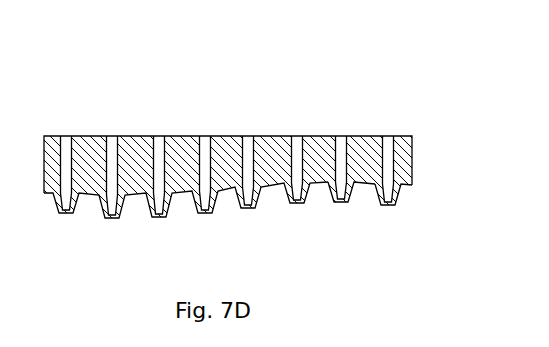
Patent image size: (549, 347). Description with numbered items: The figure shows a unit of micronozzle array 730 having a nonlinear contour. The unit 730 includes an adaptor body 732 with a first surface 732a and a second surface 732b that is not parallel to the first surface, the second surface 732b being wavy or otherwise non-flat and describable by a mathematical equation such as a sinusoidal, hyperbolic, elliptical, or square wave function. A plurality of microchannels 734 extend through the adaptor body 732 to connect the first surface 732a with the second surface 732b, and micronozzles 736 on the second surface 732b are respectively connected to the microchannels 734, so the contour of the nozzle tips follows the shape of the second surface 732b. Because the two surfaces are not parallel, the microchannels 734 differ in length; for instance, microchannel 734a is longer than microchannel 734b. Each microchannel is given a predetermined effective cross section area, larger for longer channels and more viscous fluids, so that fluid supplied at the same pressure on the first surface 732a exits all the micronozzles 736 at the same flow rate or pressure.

The unit of micronozzle array 730 is at (216, 66).
The adaptor body 732 is at (98, 135).
The first surface 732a is at (402, 135).
The second surface 732b is at (357, 200).
The microchannels 734 is at (297, 135).
The microchannel 734a is at (70, 135).
The microchannel 734b is at (346, 135).
The micronozzles 736 is at (285, 200).